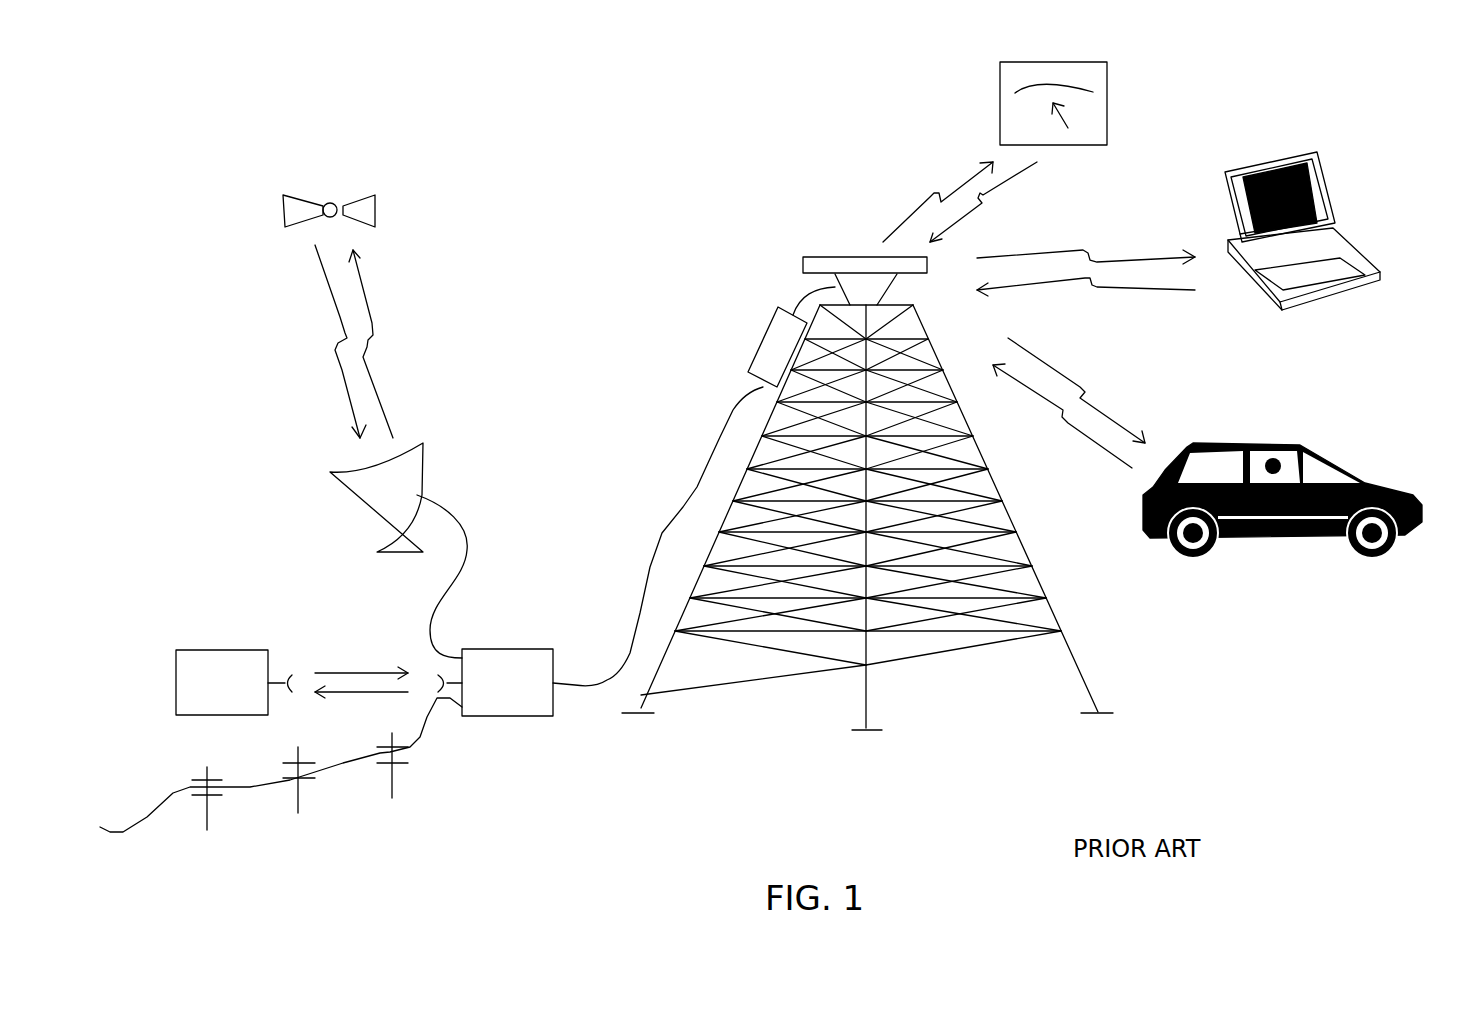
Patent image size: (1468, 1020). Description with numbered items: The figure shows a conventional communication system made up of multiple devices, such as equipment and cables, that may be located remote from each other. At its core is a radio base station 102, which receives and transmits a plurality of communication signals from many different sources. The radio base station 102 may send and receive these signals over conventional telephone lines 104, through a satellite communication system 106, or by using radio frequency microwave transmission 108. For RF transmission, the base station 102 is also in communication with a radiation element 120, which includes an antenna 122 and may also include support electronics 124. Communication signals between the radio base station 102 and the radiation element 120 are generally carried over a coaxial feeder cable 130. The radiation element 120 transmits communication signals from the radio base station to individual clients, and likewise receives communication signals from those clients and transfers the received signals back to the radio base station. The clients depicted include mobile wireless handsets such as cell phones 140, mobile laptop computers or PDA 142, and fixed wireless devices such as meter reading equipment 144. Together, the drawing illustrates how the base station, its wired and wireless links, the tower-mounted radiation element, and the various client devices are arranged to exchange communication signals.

The radio base station 102 is at (508, 648).
The conventional telephone lines 104 is at (427, 717).
The satellite communication system 106 is at (493, 308).
The radio frequency (RF) microwave transmission 108 is at (345, 648).
The radiation element 120 is at (790, 227).
The antenna 122 is at (867, 257).
The support electronics 124 is at (763, 338).
The coaxial feeder cable 130 is at (683, 505).
The cell phones 140 is at (1270, 445).
The mobile laptop computers or PDA 142 is at (1328, 177).
The meter reading equipment 144 is at (1057, 62).